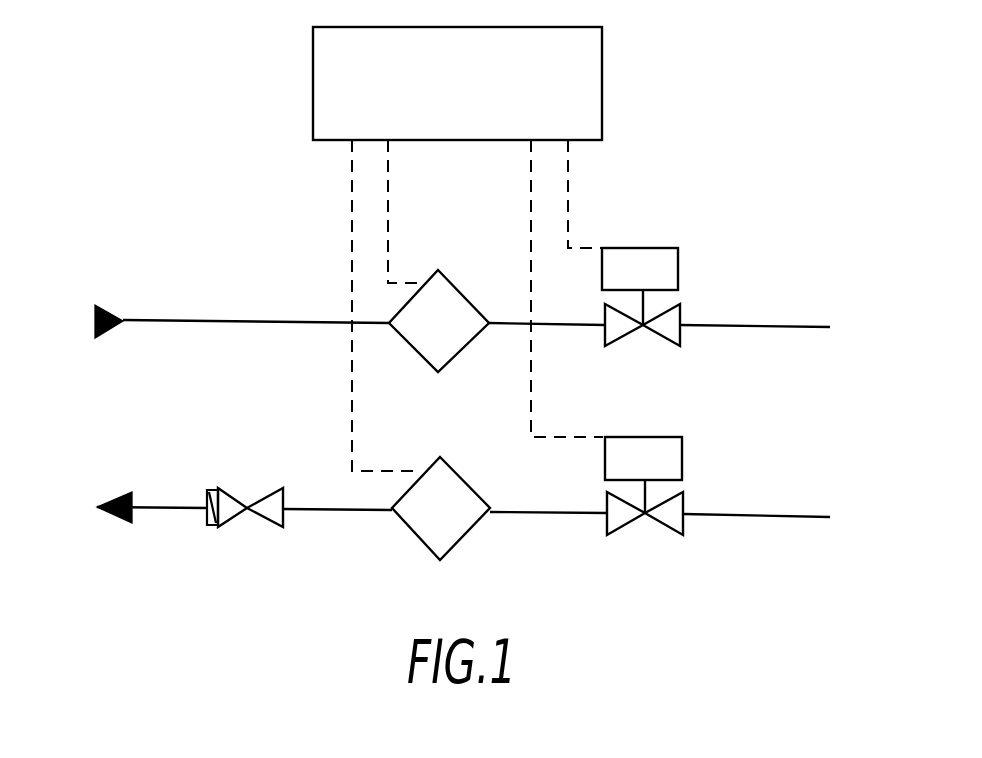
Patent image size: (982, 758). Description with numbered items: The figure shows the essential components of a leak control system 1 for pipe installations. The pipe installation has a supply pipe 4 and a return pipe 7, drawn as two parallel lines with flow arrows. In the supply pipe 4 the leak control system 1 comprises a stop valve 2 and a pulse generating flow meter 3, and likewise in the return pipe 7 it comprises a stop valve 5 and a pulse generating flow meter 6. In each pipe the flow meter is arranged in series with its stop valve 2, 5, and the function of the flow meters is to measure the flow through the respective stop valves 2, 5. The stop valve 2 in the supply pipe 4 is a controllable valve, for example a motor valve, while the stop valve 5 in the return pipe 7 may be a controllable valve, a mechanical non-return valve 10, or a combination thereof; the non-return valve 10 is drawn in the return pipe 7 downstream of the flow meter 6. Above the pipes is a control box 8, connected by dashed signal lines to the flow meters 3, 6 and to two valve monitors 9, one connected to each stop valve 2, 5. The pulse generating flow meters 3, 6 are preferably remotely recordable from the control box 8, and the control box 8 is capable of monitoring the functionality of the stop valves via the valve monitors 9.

The leak control system 1 is at (748, 141).
The stop valve 2 is at (670, 336).
The pulse generating flow meter 3 is at (456, 344).
The supply pipe 4 is at (153, 318).
The stop valve 5 is at (673, 525).
The pulse generating flow meter 6 is at (452, 535).
The return pipe 7 is at (152, 505).
The control box 8 is at (602, 90).
The valve monitor 9 is at (680, 273).
The mechanical non-return valve 10 is at (229, 497).